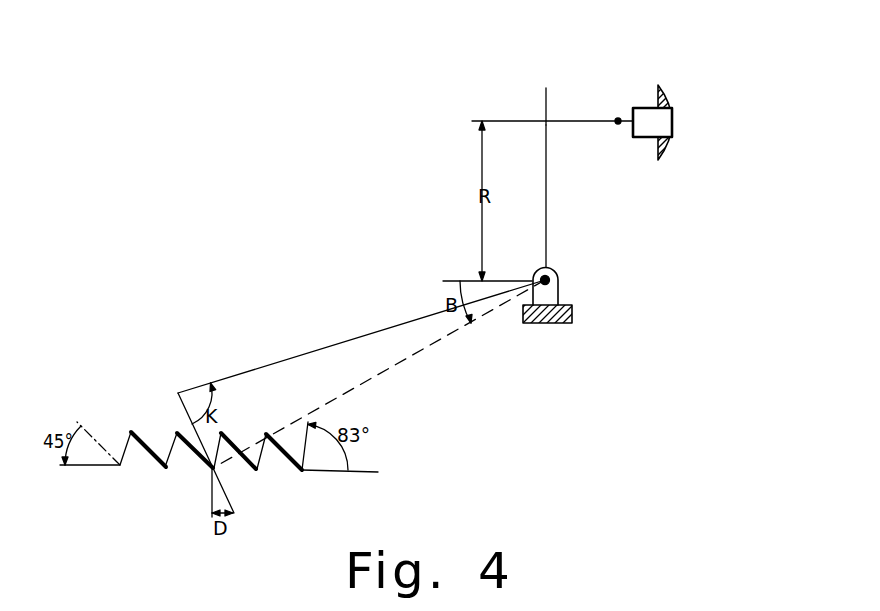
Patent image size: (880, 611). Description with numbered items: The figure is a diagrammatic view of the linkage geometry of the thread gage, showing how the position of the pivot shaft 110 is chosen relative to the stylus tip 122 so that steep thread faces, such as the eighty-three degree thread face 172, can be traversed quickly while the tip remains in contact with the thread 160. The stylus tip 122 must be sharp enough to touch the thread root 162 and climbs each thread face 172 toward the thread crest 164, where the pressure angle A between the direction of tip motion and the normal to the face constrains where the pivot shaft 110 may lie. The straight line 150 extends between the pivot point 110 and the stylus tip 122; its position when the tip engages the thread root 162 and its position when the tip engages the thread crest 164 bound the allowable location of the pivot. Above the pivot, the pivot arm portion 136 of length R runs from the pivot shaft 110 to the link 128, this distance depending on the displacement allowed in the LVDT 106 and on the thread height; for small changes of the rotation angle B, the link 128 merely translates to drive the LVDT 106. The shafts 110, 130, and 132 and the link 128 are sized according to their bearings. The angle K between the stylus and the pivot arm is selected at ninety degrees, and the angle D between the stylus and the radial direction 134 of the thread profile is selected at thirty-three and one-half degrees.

The LVDT 106 is at (647, 107).
The pivot shaft 110 is at (550, 277).
The stylus tip 122 is at (214, 469).
The link 128 is at (598, 120).
The shaft 130 is at (618, 124).
The shaft 132 is at (553, 95).
The radial direction 134 is at (210, 493).
The pivot arm portion 136 is at (547, 185).
The straight line 150 is at (418, 352).
The thread 160 is at (238, 448).
The thread root 162 is at (167, 469).
The thread crest 164 is at (266, 435).
The thread face 172 is at (262, 457).